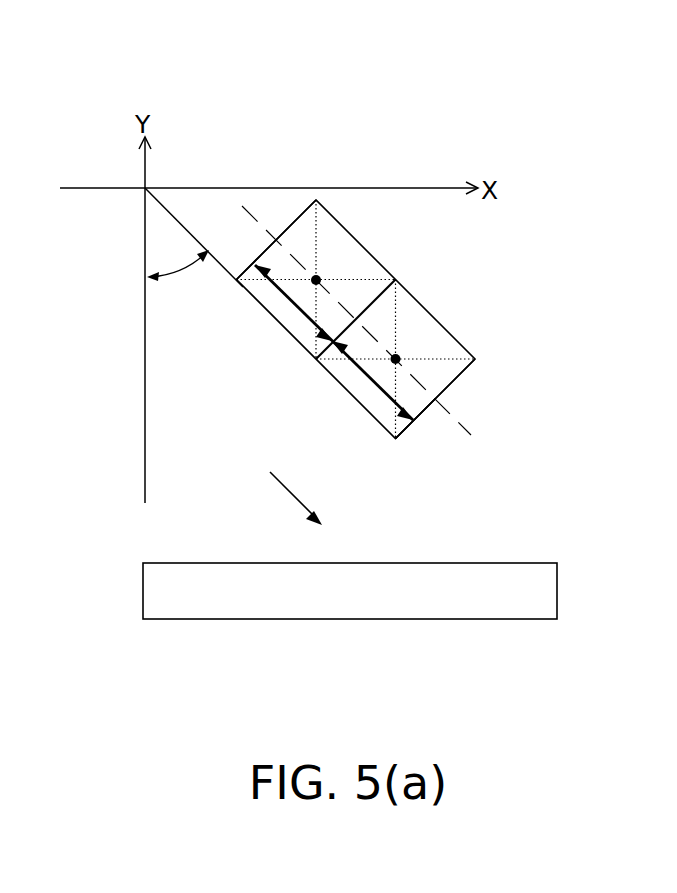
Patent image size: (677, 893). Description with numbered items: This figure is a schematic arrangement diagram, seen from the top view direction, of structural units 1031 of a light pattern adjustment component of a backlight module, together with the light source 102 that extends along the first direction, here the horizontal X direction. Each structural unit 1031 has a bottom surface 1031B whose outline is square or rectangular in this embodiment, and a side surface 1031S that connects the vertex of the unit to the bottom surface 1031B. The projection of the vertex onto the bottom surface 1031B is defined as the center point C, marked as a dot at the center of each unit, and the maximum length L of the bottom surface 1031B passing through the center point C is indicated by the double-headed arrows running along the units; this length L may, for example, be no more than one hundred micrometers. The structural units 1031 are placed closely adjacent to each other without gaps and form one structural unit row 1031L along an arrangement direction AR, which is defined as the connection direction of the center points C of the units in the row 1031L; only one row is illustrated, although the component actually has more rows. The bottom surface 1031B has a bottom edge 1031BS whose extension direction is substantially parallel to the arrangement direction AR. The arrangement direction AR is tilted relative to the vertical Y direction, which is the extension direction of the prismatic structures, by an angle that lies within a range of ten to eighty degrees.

The structural unit 1031 is at (357, 257).
The side surface 1031S is at (243, 287).
The bottom edge 1031BS is at (311, 352).
The bottom surface 1031B is at (443, 375).
The structural unit row 1031L is at (425, 412).
The light source 102 is at (143, 590).
The center point C is at (403, 360).
The maximum length L is at (280, 293).
The arrangement direction AR is at (312, 513).